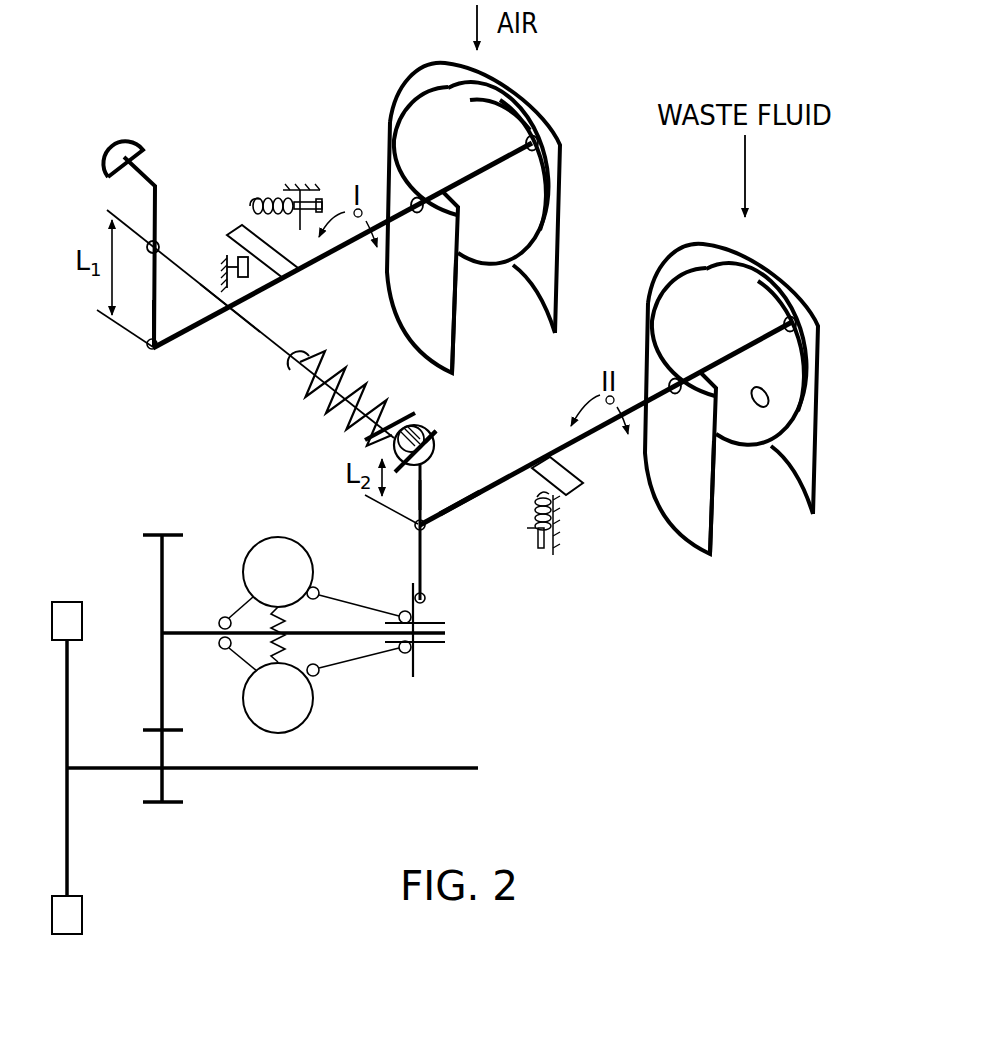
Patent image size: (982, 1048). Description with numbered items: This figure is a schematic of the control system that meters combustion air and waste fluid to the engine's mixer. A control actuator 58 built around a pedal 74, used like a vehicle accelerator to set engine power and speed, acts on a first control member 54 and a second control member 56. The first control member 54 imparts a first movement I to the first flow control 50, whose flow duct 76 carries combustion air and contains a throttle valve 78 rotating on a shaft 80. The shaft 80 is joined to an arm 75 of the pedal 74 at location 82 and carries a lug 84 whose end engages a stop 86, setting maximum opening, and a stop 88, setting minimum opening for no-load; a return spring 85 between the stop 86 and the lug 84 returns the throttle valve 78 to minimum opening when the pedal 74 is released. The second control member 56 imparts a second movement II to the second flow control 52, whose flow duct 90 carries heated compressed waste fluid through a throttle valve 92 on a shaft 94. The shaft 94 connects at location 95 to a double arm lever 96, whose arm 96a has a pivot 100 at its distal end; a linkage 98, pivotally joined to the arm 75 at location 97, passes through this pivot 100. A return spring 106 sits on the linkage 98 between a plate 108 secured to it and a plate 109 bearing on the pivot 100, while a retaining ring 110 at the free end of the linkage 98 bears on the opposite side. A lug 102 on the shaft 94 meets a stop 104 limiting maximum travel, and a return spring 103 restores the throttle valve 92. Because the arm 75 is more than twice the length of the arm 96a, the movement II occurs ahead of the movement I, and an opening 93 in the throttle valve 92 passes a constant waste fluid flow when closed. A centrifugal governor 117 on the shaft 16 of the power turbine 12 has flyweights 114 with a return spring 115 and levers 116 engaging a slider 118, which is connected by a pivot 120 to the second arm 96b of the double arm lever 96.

The power turbine 12 is at (76, 699).
The shaft 16 is at (243, 771).
The first flow control 50 is at (563, 205).
The second flow control 52 is at (819, 407).
The first control member 54 is at (312, 270).
The second control member 56 is at (558, 440).
The control actuator 58 is at (142, 318).
The pedal 74 is at (112, 158).
The arm 75 is at (158, 344).
The flow duct 76 is at (432, 282).
The throttle valve 78 is at (522, 199).
The shaft 80 is at (478, 184).
The location 82 is at (152, 352).
The lug 84 is at (242, 224).
The return spring 85 is at (273, 196).
The stop 86 is at (324, 201).
The stop 88 is at (249, 276).
The flow duct 90 is at (692, 476).
The throttle valve 92 is at (727, 338).
The opening 93 is at (764, 388).
The shaft 94 is at (455, 513).
The location 95 is at (428, 531).
The double arm lever 96 is at (416, 535).
The arm 96a is at (422, 498).
The second arm 96b is at (423, 562).
The location 97 is at (160, 244).
The linkage 98 is at (247, 322).
The pivot 100 is at (438, 437).
The lug 102 is at (573, 483).
The return spring 103 is at (557, 520).
The stop 104 is at (540, 549).
The return spring 106 is at (352, 368).
The plate 108 is at (290, 363).
The plate 109 is at (416, 418).
The retaining ring 110 is at (438, 422).
The flyweights 114 is at (298, 590).
The return spring 115 is at (266, 656).
The levers 116 is at (355, 661).
The centrifugal governor 117 is at (233, 542).
The slider 118 is at (434, 648).
The pivot 120 is at (428, 605).